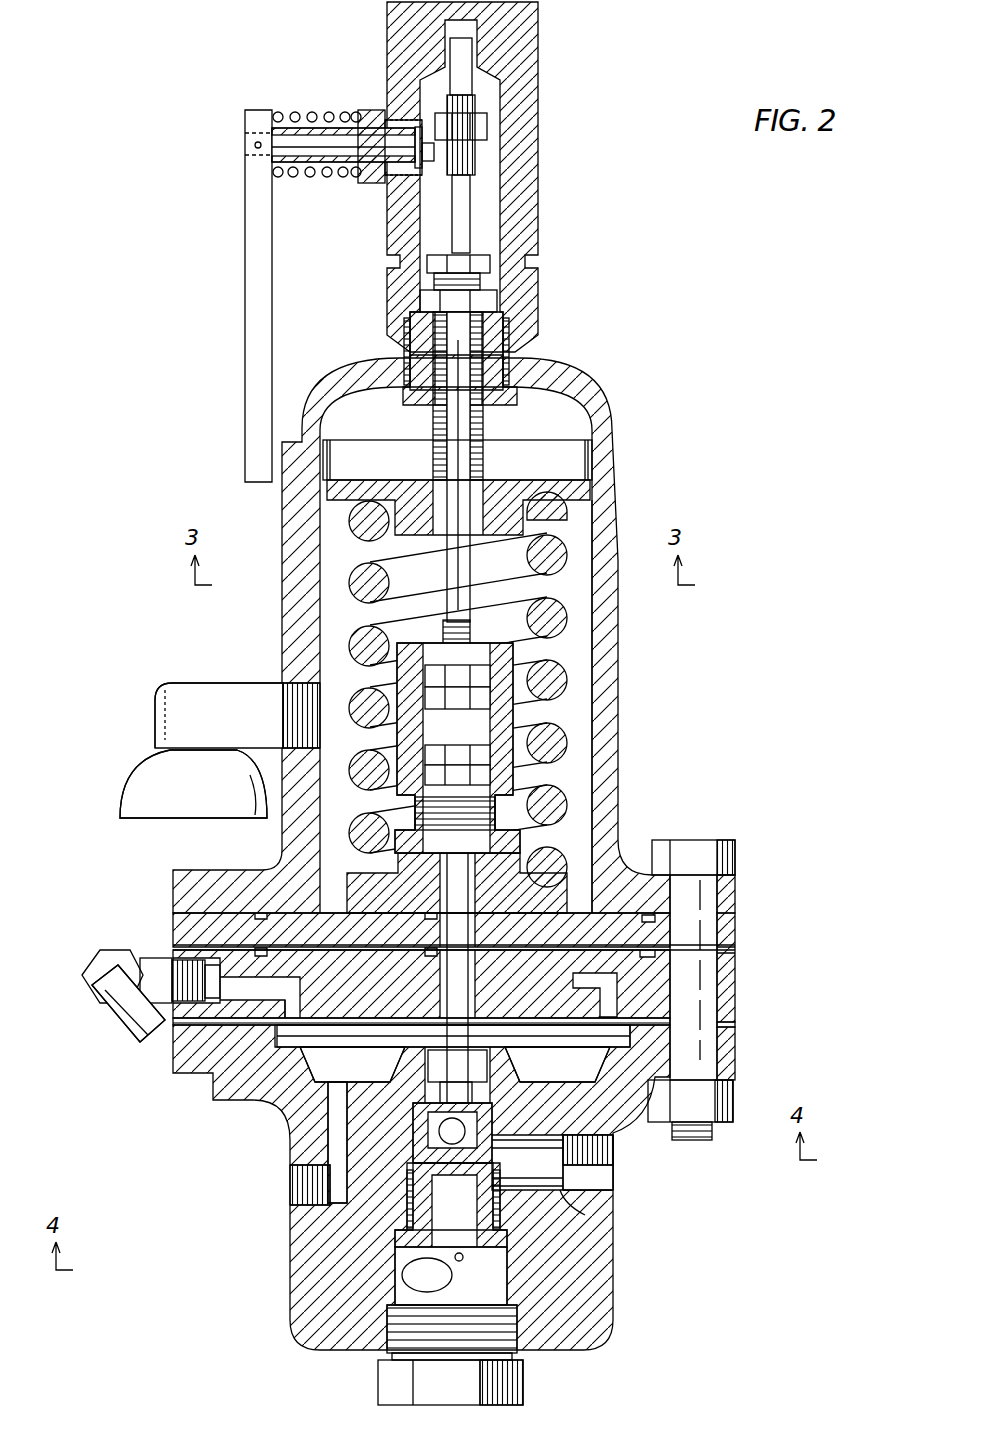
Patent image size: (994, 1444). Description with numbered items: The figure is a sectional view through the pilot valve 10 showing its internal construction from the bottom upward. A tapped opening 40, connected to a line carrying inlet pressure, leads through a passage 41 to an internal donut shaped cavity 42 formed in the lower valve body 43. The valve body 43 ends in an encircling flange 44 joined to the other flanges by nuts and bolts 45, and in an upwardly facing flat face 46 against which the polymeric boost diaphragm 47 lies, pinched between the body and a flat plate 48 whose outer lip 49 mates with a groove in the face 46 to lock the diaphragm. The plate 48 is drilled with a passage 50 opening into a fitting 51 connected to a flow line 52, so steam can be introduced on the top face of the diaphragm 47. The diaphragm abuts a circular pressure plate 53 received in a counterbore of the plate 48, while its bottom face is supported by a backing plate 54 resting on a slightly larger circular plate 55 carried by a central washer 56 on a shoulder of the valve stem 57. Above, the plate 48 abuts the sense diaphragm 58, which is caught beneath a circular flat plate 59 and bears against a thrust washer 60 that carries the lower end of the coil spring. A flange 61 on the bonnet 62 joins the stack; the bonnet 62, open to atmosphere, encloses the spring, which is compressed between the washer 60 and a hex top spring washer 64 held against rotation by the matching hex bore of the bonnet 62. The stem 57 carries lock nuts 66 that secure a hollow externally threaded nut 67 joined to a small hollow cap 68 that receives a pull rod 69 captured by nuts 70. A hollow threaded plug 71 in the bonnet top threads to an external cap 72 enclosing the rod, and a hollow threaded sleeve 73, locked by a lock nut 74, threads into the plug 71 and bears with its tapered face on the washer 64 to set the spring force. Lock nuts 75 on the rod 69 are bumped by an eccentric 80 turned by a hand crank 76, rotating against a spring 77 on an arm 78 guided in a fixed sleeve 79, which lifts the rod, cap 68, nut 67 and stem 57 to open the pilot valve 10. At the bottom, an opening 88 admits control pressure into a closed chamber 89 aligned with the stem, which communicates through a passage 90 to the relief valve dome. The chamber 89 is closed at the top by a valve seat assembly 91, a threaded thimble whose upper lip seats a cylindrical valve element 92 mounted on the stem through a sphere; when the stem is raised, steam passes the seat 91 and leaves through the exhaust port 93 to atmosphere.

The pilot valve 10 is at (738, 300).
The tapped opening 40 is at (302, 1187).
The passage 41 is at (334, 1118).
The donut shaped cavity 42 is at (453, 1051).
The lower valve body 43 is at (600, 1305).
The encircling flange 44 is at (740, 1060).
The nuts and bolts 45 is at (700, 842).
The upwardly facing flat face 46 is at (215, 1050).
The boost diaphragm 47 is at (560, 1021).
The flat plate 48 is at (730, 970).
The outer lip 49 is at (735, 1025).
The passage 50 is at (218, 945).
The fitting 51 is at (150, 962).
The flow line 52 is at (125, 1030).
The pressure plate 53 is at (285, 875).
The backing plate 54 is at (275, 1093).
The circular plate 55 is at (393, 1040).
The central washer 56 is at (480, 1040).
The valve stem 57 is at (467, 1095).
The sense diaphragm 58 is at (630, 948).
The circular flat plate 59 is at (210, 905).
The thrust washer 60 is at (598, 878).
The flange 61 is at (737, 897).
The bonnet 62 is at (585, 392).
The top spring washer 64 is at (578, 485).
The lock nuts 66 is at (490, 755).
The hollow externally threaded nut 67 is at (535, 862).
The hollow cap 68 is at (400, 690).
The pull rod 69 is at (476, 192).
The nuts 70 is at (490, 675).
The hollow threaded plug 71 is at (508, 402).
The external cap 72 is at (538, 232).
The hollow threaded sleeve 73 is at (490, 280).
The lock nut 74 is at (497, 300).
The lock nuts 75 is at (488, 130).
The hand crank 76 is at (245, 250).
The spring 77 is at (322, 112).
The arm 78 is at (312, 150).
The fixed sleeve 79 is at (378, 110).
The eccentric 80 is at (432, 158).
The opening 88 is at (463, 1258).
The chamber 89 is at (451, 1276).
The passage 90 is at (427, 1275).
The valve seat assembly 91 is at (490, 1183).
The valve element 92 is at (495, 1150).
The exhaust port 93 is at (583, 1195).